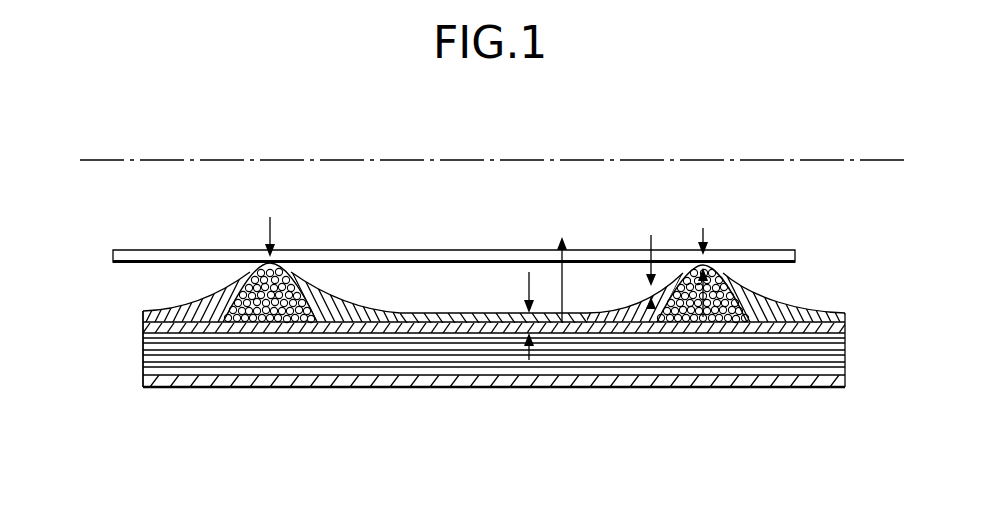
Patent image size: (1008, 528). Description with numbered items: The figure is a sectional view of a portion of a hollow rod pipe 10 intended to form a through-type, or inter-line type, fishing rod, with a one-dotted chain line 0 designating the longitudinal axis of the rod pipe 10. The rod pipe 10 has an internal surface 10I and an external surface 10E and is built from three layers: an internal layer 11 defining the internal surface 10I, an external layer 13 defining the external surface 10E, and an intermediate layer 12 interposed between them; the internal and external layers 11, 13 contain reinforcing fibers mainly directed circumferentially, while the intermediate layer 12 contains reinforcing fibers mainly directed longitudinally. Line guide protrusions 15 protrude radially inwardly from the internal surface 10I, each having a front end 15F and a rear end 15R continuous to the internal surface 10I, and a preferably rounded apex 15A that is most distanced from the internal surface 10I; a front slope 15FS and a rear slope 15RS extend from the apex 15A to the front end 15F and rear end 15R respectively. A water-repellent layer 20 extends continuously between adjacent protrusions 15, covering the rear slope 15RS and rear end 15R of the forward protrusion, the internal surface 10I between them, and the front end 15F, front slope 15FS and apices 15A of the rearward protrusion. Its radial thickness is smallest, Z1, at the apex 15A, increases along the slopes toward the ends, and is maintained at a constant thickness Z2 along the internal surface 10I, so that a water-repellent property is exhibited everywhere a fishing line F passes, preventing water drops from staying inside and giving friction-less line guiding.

The longitudinal axis 0 is at (838, 158).
The fishing line F is at (463, 250).
The rod pipe 10 is at (480, 364).
The internal surface 10I is at (143, 314).
The external surface 10E is at (186, 388).
The internal layer 11 is at (845, 326).
The intermediate layer 12 is at (845, 352).
The external layer 13 is at (845, 380).
The water-repellent layer 20 is at (380, 308).
The line guide protrusion 15 is at (232, 308).
The apex 15A is at (264, 257).
The front end 15F is at (215, 312).
The rear end 15R is at (338, 302).
The front slope 15FS is at (205, 302).
The rear slope 15RS is at (303, 272).
The smallest radial thickness Z1 is at (704, 256).
The constant thickness Z2 is at (507, 316).